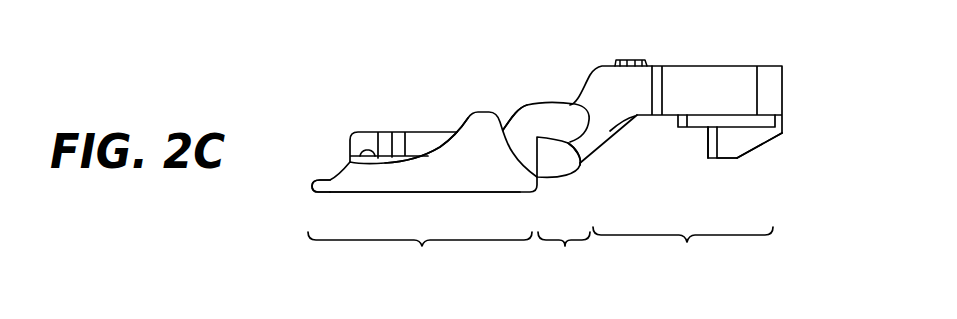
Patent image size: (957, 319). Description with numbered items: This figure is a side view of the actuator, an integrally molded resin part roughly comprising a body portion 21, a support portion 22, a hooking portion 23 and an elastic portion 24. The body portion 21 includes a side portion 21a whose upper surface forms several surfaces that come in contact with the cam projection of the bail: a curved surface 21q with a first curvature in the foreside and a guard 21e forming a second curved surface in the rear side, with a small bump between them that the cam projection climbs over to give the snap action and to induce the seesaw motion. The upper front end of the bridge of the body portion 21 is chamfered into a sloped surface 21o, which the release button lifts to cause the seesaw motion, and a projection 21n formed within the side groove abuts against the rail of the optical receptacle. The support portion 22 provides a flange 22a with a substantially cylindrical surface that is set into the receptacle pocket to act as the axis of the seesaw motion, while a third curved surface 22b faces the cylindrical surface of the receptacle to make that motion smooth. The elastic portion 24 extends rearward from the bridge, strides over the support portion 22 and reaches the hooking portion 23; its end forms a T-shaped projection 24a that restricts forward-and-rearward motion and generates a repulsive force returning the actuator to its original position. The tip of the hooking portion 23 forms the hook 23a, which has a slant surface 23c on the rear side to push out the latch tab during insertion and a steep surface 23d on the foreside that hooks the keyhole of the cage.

The body portion 21 is at (422, 198).
The side portion 21a is at (495, 192).
The curved surface 21q is at (328, 180).
The sloped surface 21o is at (352, 140).
The projection 21n is at (367, 150).
The guard 21e is at (438, 147).
The support portion 22 is at (577, 175).
The flange 22a is at (582, 163).
The third curved surface 22b is at (503, 130).
The hooking portion 23 is at (687, 170).
The hook 23a is at (738, 150).
The slant surface 23c is at (763, 150).
The steep surface 23d is at (707, 150).
The elastic portion 24 is at (626, 120).
The projection 24a is at (645, 62).